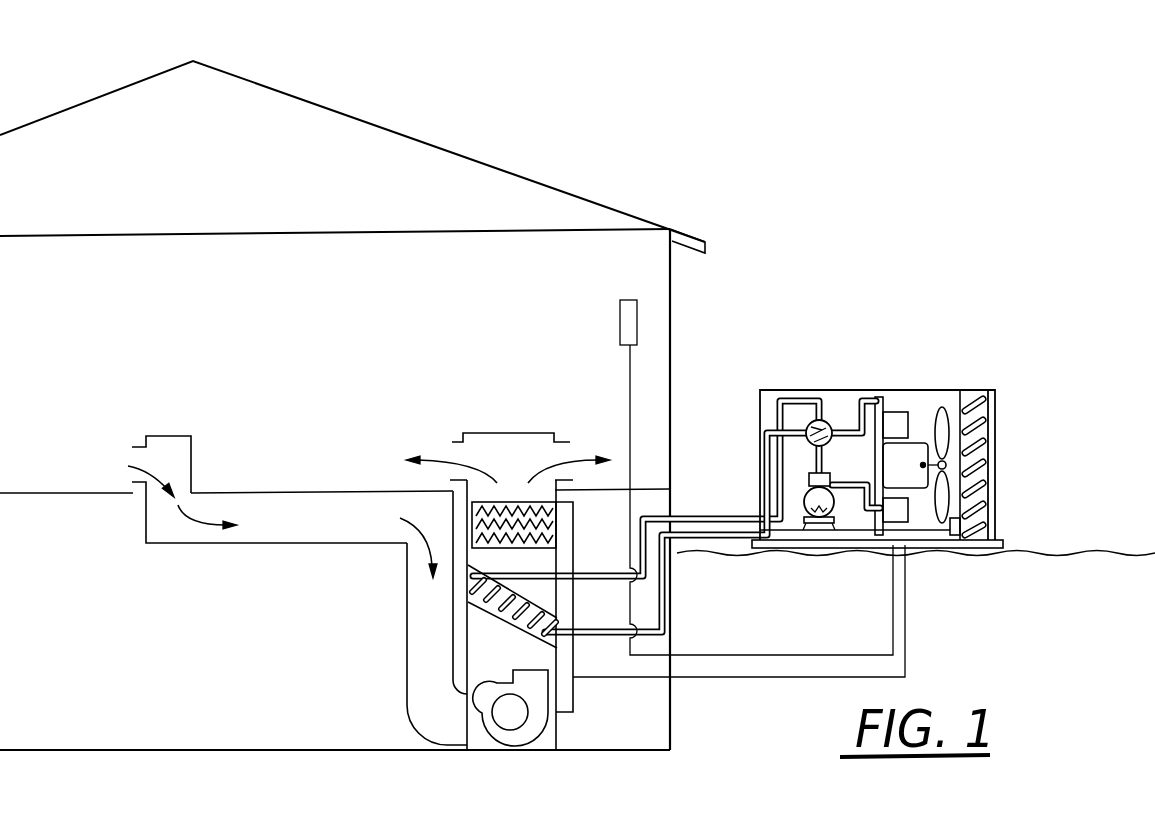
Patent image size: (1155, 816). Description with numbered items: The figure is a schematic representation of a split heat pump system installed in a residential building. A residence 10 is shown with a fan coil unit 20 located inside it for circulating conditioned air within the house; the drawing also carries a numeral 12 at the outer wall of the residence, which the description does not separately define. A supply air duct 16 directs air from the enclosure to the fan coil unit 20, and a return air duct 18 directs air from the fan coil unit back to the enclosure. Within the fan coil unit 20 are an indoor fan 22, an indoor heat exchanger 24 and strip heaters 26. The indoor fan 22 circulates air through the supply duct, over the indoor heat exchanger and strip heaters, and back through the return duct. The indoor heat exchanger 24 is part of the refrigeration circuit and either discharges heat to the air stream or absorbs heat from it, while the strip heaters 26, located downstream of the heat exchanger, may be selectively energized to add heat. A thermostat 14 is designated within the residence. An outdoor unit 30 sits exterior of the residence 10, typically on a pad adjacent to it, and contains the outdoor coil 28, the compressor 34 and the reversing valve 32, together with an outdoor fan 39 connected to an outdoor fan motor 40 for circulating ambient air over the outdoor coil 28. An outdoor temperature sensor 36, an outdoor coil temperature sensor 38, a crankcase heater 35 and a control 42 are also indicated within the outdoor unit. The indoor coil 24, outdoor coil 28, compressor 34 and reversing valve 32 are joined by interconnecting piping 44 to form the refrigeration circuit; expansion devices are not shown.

The residence 10 is at (352, 405).
The outer wall 12 is at (673, 283).
The thermostat 14 is at (619, 322).
The supply air duct 16 is at (172, 448).
The return air duct 18 is at (507, 440).
The fan coil unit 20 is at (467, 672).
The indoor fan 22 is at (490, 713).
The indoor heat exchanger 24 is at (493, 615).
The strip heaters 26 is at (475, 532).
The outdoor coil 28 is at (953, 442).
The outdoor unit 30 is at (947, 391).
The reversing valve 32 is at (826, 420).
The compressor 34 is at (838, 507).
The crankcase heater 35 is at (831, 512).
The outdoor temperature sensor 36 is at (899, 410).
The outdoor coil temperature sensor 38 is at (952, 528).
The outdoor fan 39 is at (965, 497).
The outdoor fan motor 40 is at (950, 478).
The control 42 is at (912, 523).
The interconnecting piping 44 is at (708, 522).